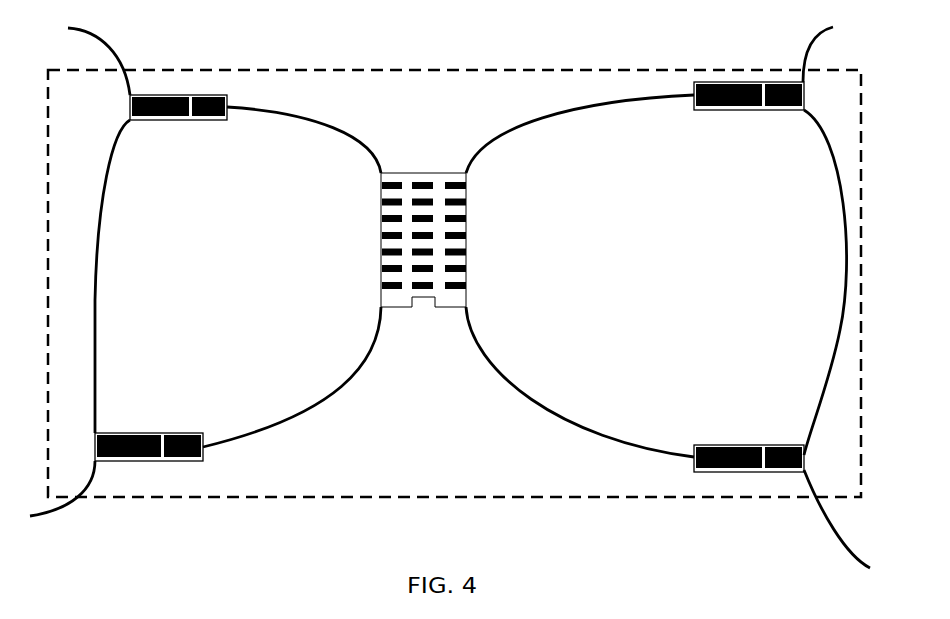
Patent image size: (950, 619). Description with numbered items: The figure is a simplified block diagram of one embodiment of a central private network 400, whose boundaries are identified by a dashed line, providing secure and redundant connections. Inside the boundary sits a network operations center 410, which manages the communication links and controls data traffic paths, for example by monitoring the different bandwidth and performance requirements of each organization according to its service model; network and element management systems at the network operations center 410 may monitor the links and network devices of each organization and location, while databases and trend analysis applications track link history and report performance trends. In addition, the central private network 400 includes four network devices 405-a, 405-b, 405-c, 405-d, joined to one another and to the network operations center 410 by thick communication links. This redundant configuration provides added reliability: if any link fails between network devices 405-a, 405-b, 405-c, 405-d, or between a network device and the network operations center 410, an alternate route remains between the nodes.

The central private network 400 is at (685, 547).
The network device 405-a is at (130, 106).
The network device 405-b is at (694, 106).
The network device 405-c is at (150, 433).
The network device 405-d is at (728, 445).
The network operations center 410 is at (382, 238).